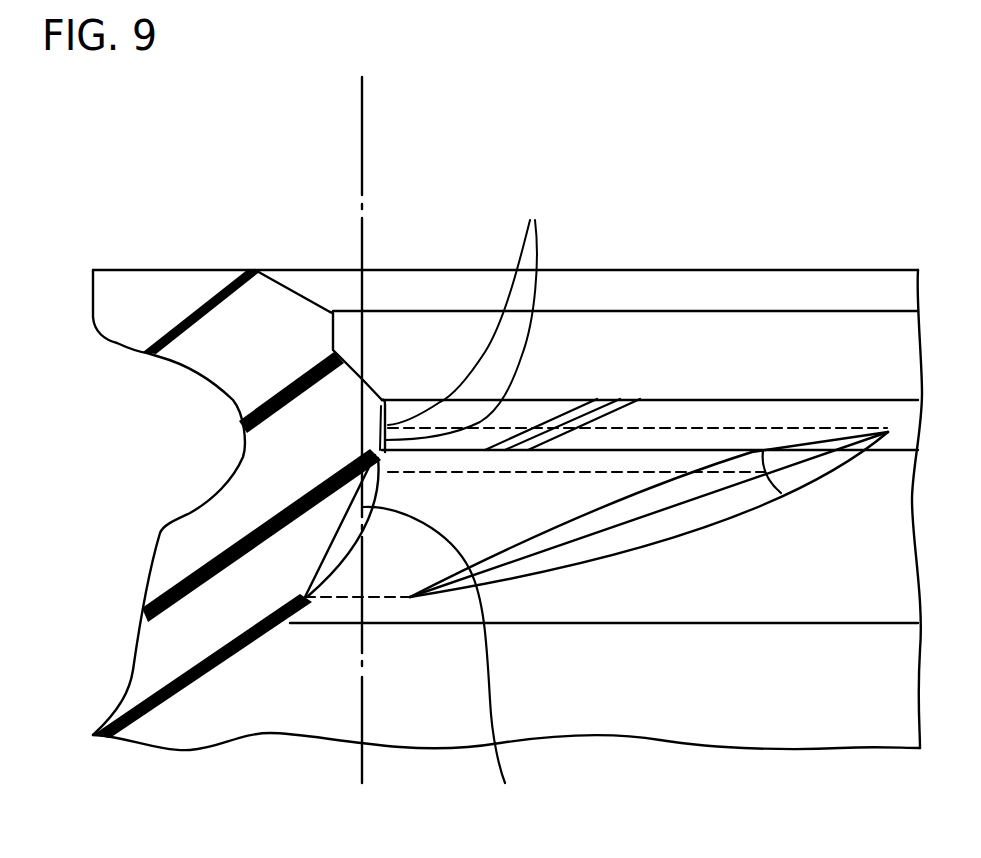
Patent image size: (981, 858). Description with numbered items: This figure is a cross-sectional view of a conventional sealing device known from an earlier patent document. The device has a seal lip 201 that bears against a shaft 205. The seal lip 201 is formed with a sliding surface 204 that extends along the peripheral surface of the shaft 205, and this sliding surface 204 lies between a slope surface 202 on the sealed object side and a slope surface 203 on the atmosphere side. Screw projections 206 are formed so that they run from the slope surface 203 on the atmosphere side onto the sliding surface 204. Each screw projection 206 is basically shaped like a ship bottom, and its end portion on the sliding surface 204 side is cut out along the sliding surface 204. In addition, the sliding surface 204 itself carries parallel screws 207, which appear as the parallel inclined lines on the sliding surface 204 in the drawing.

The seal lip 201 is at (197, 242).
The slope surface on sealed object side 202 is at (363, 380).
The slope surface on atmosphere side 203 is at (388, 563).
The sliding surface 204 is at (477, 312).
The shaft 205 is at (362, 148).
The screw projection 206 is at (547, 562).
The parallel screws 207 is at (553, 417).